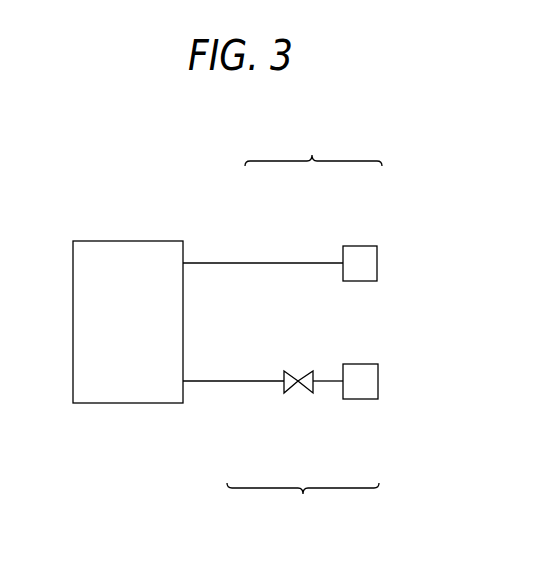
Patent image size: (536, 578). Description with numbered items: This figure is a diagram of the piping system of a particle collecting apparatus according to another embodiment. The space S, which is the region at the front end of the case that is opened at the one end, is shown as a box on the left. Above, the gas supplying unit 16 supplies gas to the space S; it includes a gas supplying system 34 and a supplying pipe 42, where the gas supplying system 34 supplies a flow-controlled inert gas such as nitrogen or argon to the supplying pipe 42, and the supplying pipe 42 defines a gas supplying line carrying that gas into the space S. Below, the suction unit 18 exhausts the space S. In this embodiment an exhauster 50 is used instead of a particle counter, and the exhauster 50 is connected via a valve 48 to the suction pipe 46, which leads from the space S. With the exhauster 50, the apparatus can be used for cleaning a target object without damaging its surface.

The space S is at (118, 258).
The gas supplying unit 16 is at (313, 148).
The supplying pipe 42 is at (271, 263).
The gas supplying system 34 is at (357, 246).
The suction unit 18 is at (303, 505).
The suction pipe 46 is at (243, 382).
The valve 48 is at (302, 394).
The exhauster 50 is at (363, 400).